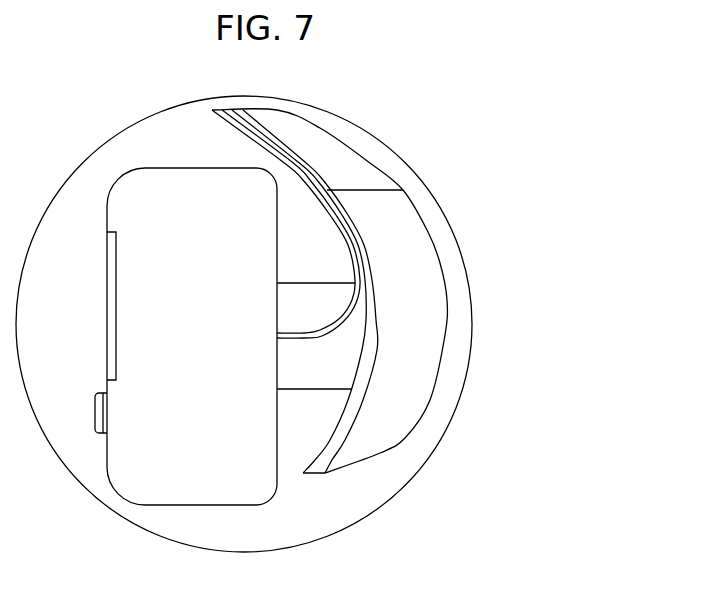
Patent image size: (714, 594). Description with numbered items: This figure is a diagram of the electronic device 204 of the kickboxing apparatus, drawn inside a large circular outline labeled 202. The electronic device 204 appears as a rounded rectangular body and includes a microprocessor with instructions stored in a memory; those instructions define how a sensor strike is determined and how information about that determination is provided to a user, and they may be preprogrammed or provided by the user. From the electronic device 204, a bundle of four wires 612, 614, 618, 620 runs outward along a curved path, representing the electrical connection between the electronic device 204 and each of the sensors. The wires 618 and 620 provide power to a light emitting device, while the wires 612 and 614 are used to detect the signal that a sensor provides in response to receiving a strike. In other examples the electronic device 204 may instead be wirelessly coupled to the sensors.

The housing 202 is at (156, 114).
The electronic device 204 is at (178, 313).
The wire 612 is at (315, 334).
The wire 614 is at (291, 224).
The wire 620 is at (299, 291).
The wire 618 is at (310, 291).